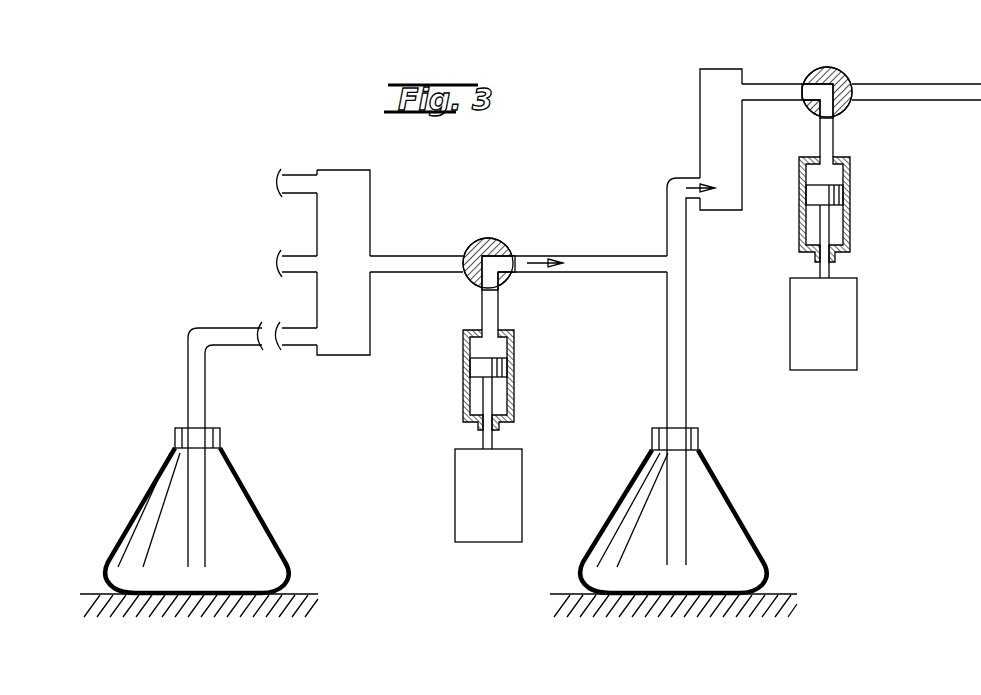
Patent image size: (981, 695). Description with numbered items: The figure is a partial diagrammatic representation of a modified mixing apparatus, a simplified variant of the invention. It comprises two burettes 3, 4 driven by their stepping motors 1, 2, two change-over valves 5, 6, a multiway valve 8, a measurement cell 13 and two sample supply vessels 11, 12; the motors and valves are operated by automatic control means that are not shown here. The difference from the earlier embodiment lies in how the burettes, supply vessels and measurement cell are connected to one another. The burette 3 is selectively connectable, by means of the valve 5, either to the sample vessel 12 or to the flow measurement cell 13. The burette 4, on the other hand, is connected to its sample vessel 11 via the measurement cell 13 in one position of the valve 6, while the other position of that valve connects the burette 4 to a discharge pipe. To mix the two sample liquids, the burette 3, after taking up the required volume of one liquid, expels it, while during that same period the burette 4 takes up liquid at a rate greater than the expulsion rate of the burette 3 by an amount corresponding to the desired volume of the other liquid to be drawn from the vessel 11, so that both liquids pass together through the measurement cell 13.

The stepping motor 1 is at (470, 494).
The stepping motor 2 is at (840, 333).
The burette 3 is at (497, 347).
The burette 4 is at (835, 173).
The change-over valve 5 is at (490, 238).
The change-over valve 6 is at (838, 68).
The multiway valve 8 is at (355, 200).
The sample supply vessel 11 is at (730, 535).
The sample supply vessel 12 is at (247, 528).
The measurement cell 13 is at (712, 108).